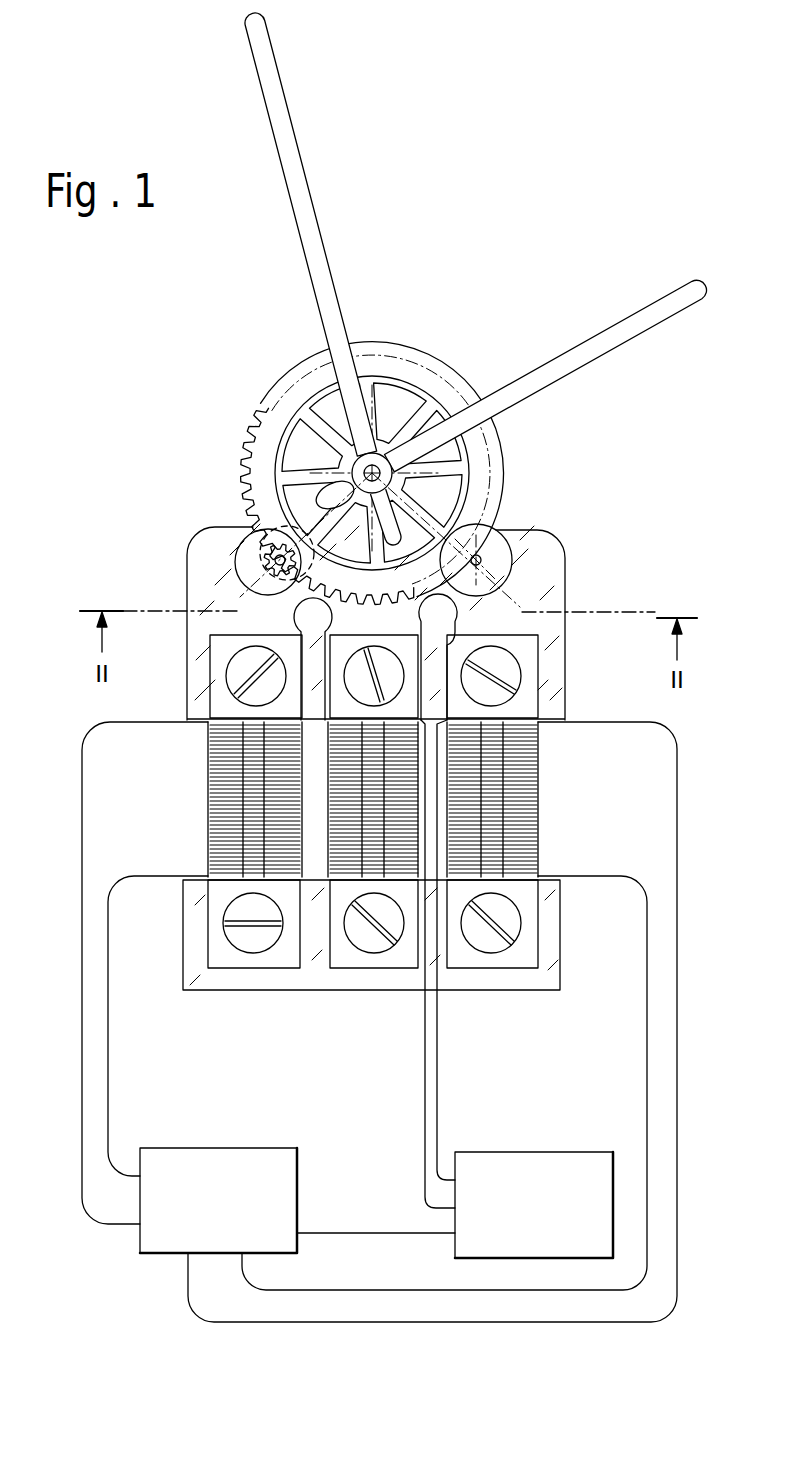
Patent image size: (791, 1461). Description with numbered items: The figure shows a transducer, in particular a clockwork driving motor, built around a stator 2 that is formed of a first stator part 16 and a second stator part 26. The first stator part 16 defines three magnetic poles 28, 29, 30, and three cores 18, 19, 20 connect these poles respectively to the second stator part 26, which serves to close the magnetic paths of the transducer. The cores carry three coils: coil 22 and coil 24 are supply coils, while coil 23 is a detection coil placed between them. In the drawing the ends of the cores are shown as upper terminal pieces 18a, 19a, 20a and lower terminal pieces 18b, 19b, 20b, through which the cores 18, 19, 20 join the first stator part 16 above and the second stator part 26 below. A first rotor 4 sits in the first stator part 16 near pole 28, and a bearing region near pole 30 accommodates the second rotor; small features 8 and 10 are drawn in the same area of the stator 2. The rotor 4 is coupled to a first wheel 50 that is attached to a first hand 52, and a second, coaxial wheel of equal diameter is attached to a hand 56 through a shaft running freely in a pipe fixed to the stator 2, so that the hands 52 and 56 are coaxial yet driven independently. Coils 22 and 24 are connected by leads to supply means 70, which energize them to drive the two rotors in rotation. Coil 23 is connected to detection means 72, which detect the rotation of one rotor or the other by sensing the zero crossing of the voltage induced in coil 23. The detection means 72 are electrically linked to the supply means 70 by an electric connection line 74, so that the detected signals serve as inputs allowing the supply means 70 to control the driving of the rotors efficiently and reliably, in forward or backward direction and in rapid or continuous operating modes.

The stator 2 is at (558, 513).
The rotor 4 is at (250, 562).
The intermediate gear 8 is at (240, 542).
The base block 10 is at (553, 548).
The first stator part 16 is at (553, 597).
The core 18 is at (246, 780).
The core 19 is at (363, 784).
The core 20 is at (493, 820).
The upper terminal of first coil 18a is at (226, 645).
The upper terminal of second coil 19a is at (512, 648).
The upper terminal of third coil 20a is at (523, 700).
The lower terminal of first coil 18b is at (222, 957).
The lower terminal of second coil 19b is at (340, 957).
The lower terminal of third coil 20b is at (477, 957).
The coil 22 is at (208, 757).
The coil 23 is at (345, 825).
The coil 24 is at (538, 797).
The second stator part 26 is at (543, 953).
The magnetic pole 28 is at (208, 597).
The magnetic pole 29 is at (383, 622).
The magnetic pole 30 is at (552, 582).
The first wheel 50 is at (412, 372).
The first hand 52 is at (618, 333).
The hand 56 is at (311, 240).
The supply means 70 is at (165, 1160).
The detection means 72 is at (597, 1170).
The electric connection line 74 is at (370, 1233).